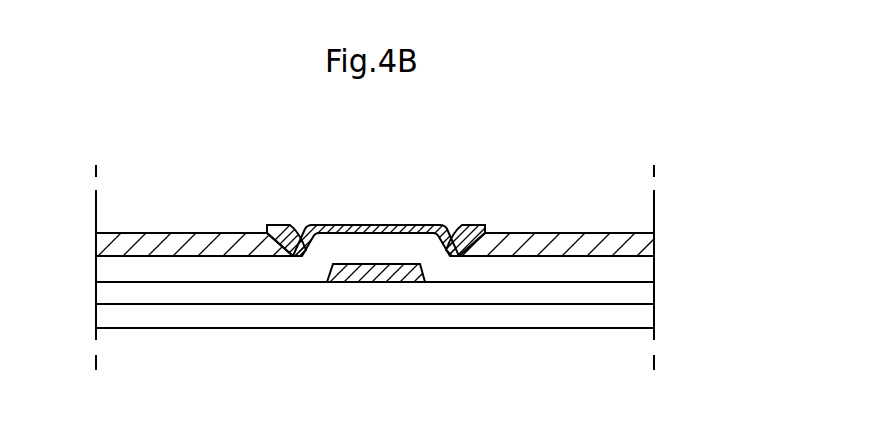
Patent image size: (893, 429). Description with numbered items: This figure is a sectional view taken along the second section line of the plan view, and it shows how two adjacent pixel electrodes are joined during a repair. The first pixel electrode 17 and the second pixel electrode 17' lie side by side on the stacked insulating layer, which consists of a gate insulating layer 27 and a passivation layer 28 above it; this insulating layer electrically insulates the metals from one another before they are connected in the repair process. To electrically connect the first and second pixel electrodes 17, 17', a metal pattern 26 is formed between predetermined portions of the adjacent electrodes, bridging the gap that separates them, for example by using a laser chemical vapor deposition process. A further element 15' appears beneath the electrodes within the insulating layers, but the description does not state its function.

The first pixel electrode 17 is at (196, 209).
The second pixel electrode 17' is at (602, 233).
The metal pattern 26 is at (318, 222).
The passivation layer 28 is at (645, 270).
The gate insulating layer 27 is at (645, 292).
The gate electrode 15' is at (374, 326).